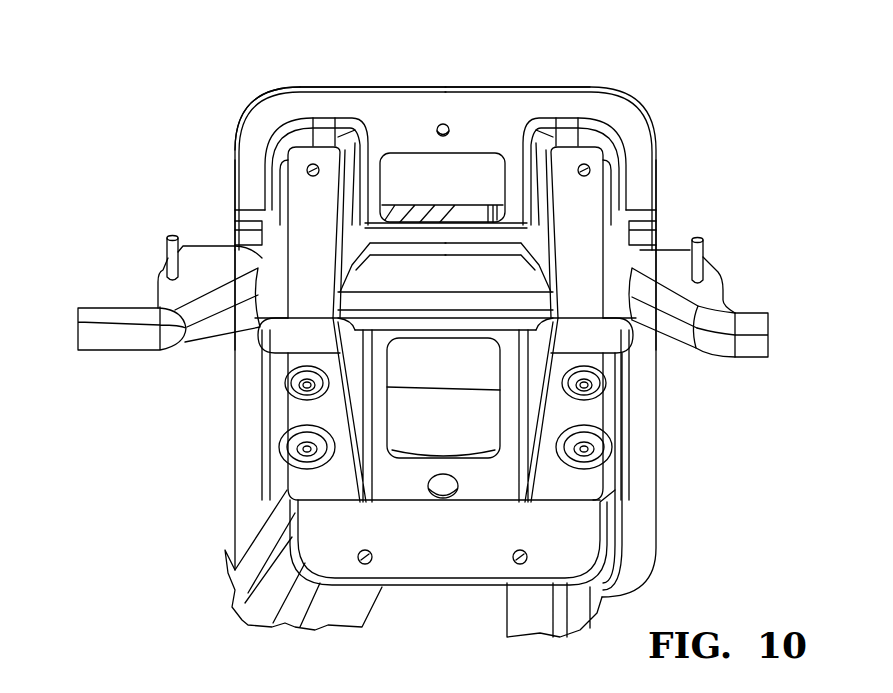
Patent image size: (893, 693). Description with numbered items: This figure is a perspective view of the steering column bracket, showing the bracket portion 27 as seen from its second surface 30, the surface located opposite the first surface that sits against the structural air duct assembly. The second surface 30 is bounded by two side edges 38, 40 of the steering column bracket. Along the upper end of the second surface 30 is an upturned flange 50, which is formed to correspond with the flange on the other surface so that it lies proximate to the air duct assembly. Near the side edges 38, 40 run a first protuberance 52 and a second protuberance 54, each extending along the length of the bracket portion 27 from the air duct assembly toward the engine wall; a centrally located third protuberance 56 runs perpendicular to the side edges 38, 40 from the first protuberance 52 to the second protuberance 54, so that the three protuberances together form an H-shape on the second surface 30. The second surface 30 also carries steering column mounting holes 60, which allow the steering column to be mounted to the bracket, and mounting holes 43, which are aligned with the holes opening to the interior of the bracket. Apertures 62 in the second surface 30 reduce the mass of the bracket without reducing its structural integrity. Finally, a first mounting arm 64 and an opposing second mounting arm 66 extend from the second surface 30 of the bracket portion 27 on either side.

The bracket portion 27 is at (183, 86).
The second surface 30 is at (472, 550).
The side edge 38 is at (235, 154).
The side edge 40 is at (656, 154).
The mounting holes 43 is at (300, 446).
The flange 50 is at (510, 122).
The first protuberance 52 is at (312, 232).
The second protuberance 54 is at (640, 258).
The third protuberance 56 is at (403, 232).
The steering column mounting holes 60 is at (308, 174).
The apertures 62 is at (465, 185).
The first mounting arm 64 is at (78, 333).
The second mounting arm 66 is at (768, 335).